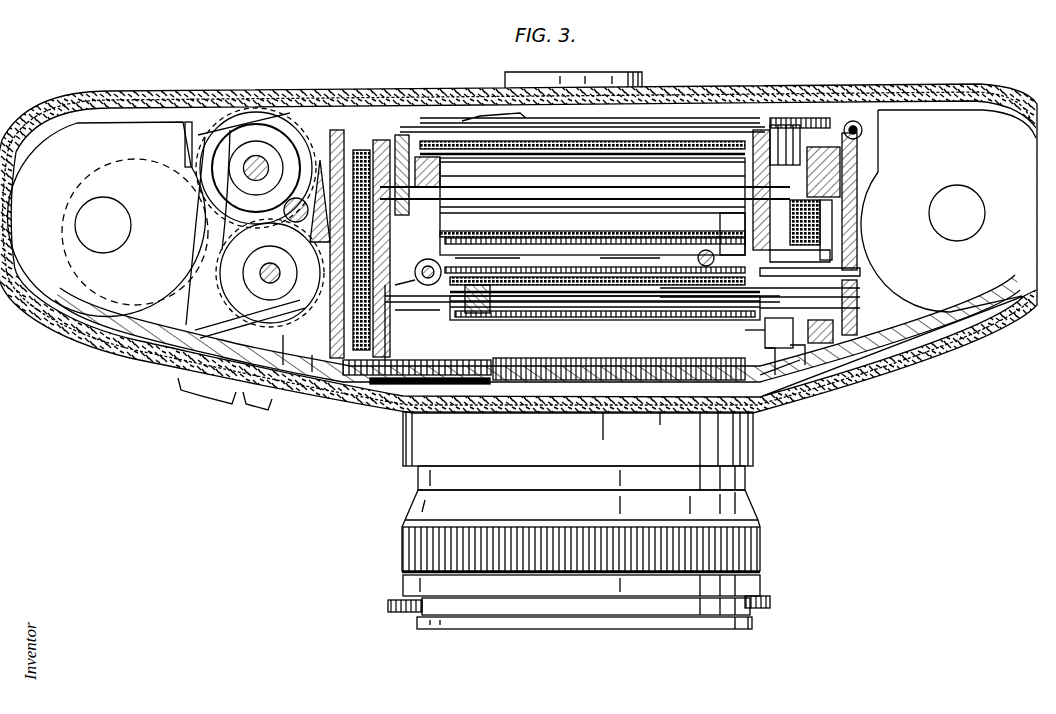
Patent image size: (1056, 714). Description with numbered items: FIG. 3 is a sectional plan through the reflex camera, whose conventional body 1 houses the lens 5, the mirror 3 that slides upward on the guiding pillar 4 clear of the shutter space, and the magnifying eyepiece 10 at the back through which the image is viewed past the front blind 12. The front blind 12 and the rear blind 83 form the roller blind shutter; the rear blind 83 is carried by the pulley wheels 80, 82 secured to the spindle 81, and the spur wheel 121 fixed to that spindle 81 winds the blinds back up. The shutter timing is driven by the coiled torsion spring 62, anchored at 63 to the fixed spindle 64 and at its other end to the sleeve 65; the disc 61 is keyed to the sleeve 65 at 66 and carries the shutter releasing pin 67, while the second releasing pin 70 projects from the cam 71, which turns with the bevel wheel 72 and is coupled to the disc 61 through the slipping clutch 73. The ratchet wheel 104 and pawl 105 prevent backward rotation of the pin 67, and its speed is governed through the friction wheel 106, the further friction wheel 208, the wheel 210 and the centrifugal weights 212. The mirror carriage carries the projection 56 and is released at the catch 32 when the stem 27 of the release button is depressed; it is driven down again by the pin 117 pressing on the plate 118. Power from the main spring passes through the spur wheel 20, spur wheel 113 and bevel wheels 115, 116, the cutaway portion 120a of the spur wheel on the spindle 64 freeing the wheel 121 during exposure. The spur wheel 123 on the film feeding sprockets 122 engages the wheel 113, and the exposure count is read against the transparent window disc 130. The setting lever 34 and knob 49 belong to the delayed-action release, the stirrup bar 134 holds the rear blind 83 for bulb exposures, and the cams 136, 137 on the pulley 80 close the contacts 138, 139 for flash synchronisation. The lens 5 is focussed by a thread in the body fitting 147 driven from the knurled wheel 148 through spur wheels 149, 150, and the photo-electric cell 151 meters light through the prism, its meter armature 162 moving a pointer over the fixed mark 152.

The body 1 is at (286, 94).
The mirror 3 is at (575, 260).
The guiding pillar 4 is at (418, 293).
The lens 5 is at (400, 549).
The magnifying eyepiece 10 is at (587, 74).
The front blind 12 is at (482, 140).
The spur wheel 20 is at (118, 300).
The stem 27 is at (236, 222).
The catch 32 is at (535, 252).
The setting lever 34 is at (213, 398).
The knob 49 is at (256, 408).
The projection 56 is at (430, 290).
The disc 61 is at (710, 253).
The coiled torsion spring 62 is at (546, 310).
The spring anchorage 63 is at (468, 290).
The fixed spindle 64 is at (602, 300).
The sleeve 65 is at (707, 320).
The key 66 is at (842, 280).
The shutter releasing pin 67 is at (846, 256).
The second shutter releasing pin 70 is at (783, 333).
The cam 71 is at (706, 252).
The bevel wheel 72 is at (776, 345).
The slipping clutch 73 is at (792, 346).
The pulley wheel 80 is at (840, 196).
The spindle 81 is at (647, 190).
The pulley wheel 82 is at (399, 140).
The rear blind 83 is at (543, 137).
The ratchet wheel 104 is at (846, 345).
The pawl 105 is at (830, 387).
The friction wheel 106 is at (853, 330).
The spur wheel 113 is at (212, 276).
The bevel wheel 115 is at (282, 366).
The bevel wheel 116 is at (313, 372).
The pin 117 is at (450, 226).
The plate 118 is at (428, 386).
The cutaway portion 120a is at (500, 246).
The spur wheel 121 is at (377, 140).
The film feeding sprockets 122 is at (253, 117).
The spur wheel 123 is at (220, 123).
The transparent window disc 130 is at (92, 233).
The stirrup bar 134 is at (648, 246).
The cam 136 is at (776, 160).
The cam 137 is at (785, 160).
The electrical contacts 138 is at (796, 150).
The electrical contacts 139 is at (842, 100).
The camera body fitting 147 is at (725, 440).
The knurled wheel 148 is at (350, 384).
The spur wheel 149 is at (384, 362).
The spur wheel 150 is at (470, 382).
The photo-electric cell 151 is at (720, 436).
The fixed mark 152 is at (677, 412).
The double moving coil armature 162 is at (835, 215).
The friction wheel 208 is at (836, 236).
The wheel 210 is at (830, 182).
The weights 212 is at (361, 150).